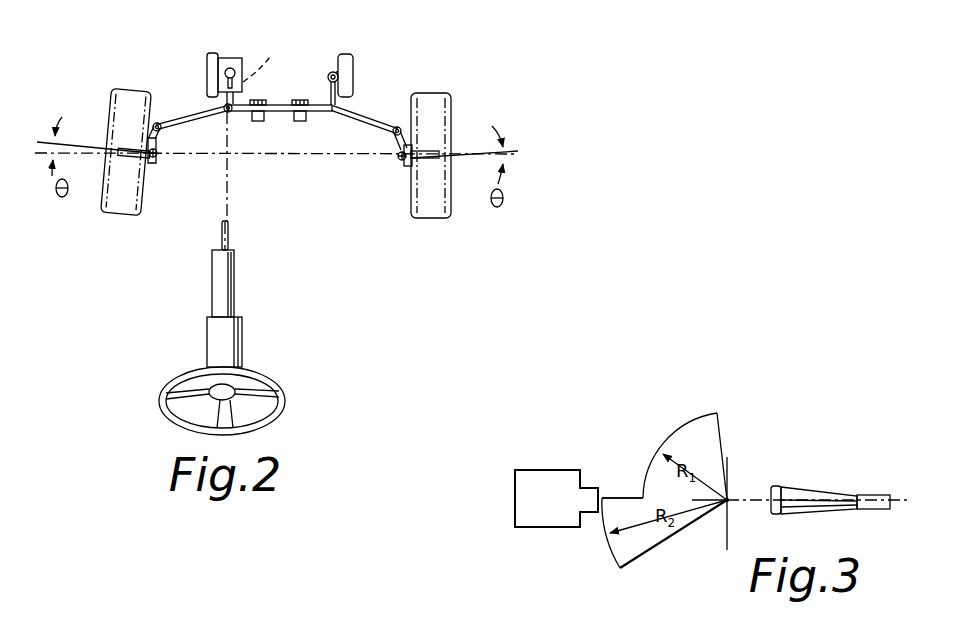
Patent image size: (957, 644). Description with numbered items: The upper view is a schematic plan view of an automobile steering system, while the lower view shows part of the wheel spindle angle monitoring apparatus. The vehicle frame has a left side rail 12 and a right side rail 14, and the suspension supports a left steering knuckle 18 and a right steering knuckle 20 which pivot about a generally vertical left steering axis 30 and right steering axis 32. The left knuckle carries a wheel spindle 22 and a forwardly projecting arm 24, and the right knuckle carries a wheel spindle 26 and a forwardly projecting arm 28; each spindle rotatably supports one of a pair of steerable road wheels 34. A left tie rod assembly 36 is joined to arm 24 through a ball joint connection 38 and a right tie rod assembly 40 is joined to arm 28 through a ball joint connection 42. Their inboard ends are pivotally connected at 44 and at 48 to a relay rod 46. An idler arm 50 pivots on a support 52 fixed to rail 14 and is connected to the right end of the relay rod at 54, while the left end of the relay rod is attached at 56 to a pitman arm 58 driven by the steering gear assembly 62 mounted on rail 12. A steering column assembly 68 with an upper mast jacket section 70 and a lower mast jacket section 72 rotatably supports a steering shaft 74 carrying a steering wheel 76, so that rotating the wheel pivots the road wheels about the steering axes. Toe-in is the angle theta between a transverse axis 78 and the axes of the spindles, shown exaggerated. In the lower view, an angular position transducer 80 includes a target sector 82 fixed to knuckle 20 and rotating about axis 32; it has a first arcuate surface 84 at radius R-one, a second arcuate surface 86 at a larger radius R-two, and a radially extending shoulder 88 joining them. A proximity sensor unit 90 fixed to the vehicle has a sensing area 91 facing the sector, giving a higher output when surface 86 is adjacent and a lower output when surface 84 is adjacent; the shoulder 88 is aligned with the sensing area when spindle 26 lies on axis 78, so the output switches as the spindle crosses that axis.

In FIG. 2, the left side rail 12 is at (212, 58).
In FIG. 2, the right side rail 14 is at (350, 72).
In FIG. 2, the left steering knuckle 18 is at (153, 168).
In FIG. 2, the right steering knuckle 20 is at (407, 168).
In FIG. 3, the right steering knuckle 20 is at (793, 480).
In FIG. 2, the wheel spindle 22 is at (123, 148).
In FIG. 2, the forwardly projecting arm 24 is at (155, 143).
In FIG. 2, the wheel spindle 26 is at (426, 153).
In FIG. 3, the wheel spindle 26 is at (840, 497).
In FIG. 2, the forwardly projecting arm 28 is at (400, 135).
In FIG. 2, the left steering axis 30 is at (157, 156).
In FIG. 2, the right steering axis 32 is at (402, 160).
In FIG. 3, the right steering axis 32 is at (730, 503).
In FIG. 2, the steerable road wheels 34 is at (127, 90).
In FIG. 2, the left tie rod assembly 36 is at (197, 110).
In FIG. 2, the ball joint connection 38 is at (159, 123).
In FIG. 2, the right tie rod assembly 40 is at (367, 115).
In FIG. 2, the ball joint connection 42 is at (398, 127).
In FIG. 2, the pivotal connection 44 is at (262, 122).
In FIG. 2, the relay rod 46 is at (266, 105).
In FIG. 2, the pivotal connection 48 is at (300, 122).
In FIG. 2, the idler arm 50 is at (330, 73).
In FIG. 2, the support 52 is at (336, 70).
In FIG. 2, the pivotal connection 54 is at (332, 112).
In FIG. 2, the pivotal connection 56 is at (232, 114).
In FIG. 2, the pitman arm 58 is at (270, 57).
In FIG. 2, the steering gear assembly 62 is at (237, 56).
In FIG. 2, the steering column assembly 68 is at (252, 345).
In FIG. 2, the upper mast jacket section 70 is at (215, 343).
In FIG. 2, the lower mast jacket section 72 is at (222, 283).
In FIG. 2, the steering shaft 74 is at (228, 236).
In FIG. 2, the steering wheel 76 is at (272, 417).
In FIG. 2, the transverse axis 78 is at (519, 151).
In FIG. 3, the transverse axis 78 is at (900, 498).
In FIG. 3, the angular position transducer 80 is at (668, 412).
In FIG. 3, the target sector 82 is at (729, 443).
In FIG. 3, the first arcuate surface 84 is at (690, 416).
In FIG. 3, the second arcuate surface 86 is at (612, 553).
In FIG. 3, the radially extending shoulder 88 is at (626, 497).
In FIG. 3, the proximity sensor unit 90 is at (555, 512).
In FIG. 3, the sensing area 91 is at (604, 495).